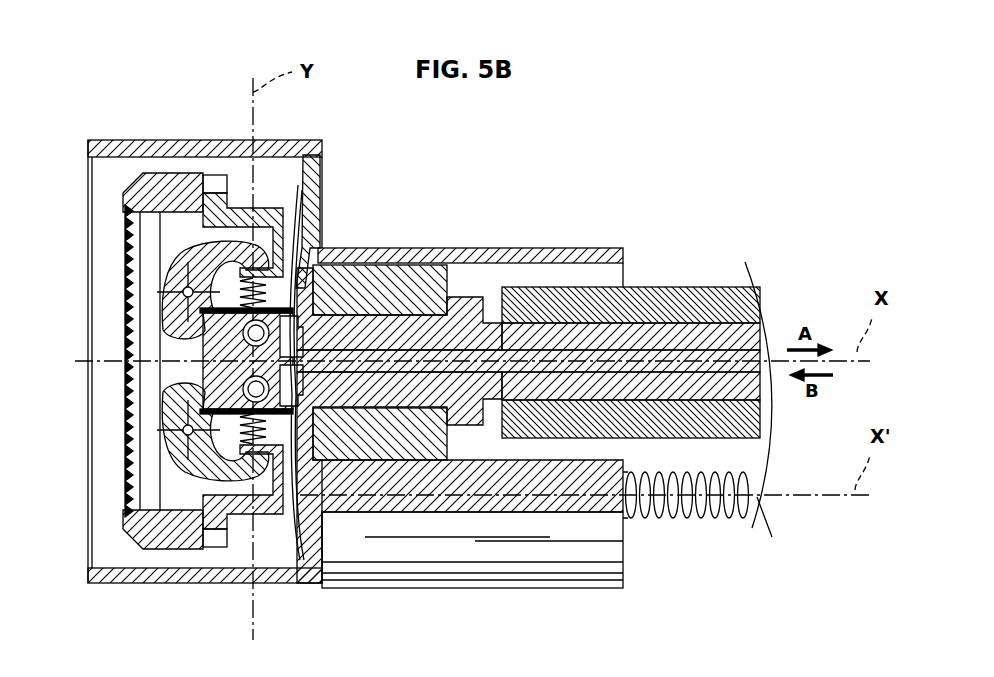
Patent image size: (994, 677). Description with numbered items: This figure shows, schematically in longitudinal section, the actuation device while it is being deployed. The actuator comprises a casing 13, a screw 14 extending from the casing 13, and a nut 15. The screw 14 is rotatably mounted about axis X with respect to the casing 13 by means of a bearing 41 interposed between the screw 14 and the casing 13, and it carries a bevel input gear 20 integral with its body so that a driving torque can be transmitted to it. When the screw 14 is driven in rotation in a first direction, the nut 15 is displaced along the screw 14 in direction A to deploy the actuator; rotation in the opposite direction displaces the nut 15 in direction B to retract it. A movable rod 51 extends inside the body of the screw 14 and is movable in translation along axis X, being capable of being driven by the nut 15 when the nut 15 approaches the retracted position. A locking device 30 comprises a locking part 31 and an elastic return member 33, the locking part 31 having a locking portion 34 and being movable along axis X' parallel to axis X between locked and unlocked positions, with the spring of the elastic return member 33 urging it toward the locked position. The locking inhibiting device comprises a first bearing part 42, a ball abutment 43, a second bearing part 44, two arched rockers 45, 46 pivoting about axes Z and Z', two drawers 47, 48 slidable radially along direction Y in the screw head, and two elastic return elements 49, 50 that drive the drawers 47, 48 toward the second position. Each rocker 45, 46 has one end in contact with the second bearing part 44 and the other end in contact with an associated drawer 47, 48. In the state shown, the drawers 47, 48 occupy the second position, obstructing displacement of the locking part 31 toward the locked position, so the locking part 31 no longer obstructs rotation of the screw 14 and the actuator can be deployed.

The casing 13 is at (190, 150).
The screw 14 is at (702, 333).
The nut 15 is at (656, 300).
The bevel input gear 20 is at (138, 540).
The locking device 30 is at (703, 527).
The locking part 31 is at (655, 500).
The elastic return member 33 is at (630, 505).
The locking portion 34 is at (272, 517).
The bearing 41 is at (387, 278).
The first bearing part 42 is at (322, 253).
The ball abutment 43 is at (312, 185).
The second bearing part 44 is at (218, 370).
The rocker 45 is at (200, 255).
The rocker 46 is at (200, 465).
The inhibition part (drawer) 47 is at (267, 213).
The inhibition part (drawer) 48 is at (213, 528).
The elastic return element 49 is at (298, 188).
The elastic return element 50 is at (300, 560).
The movable rod 51 is at (567, 355).